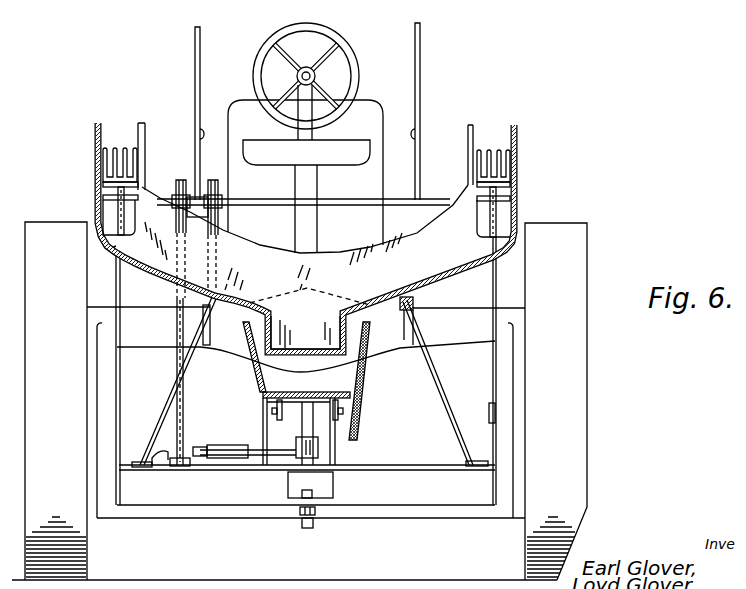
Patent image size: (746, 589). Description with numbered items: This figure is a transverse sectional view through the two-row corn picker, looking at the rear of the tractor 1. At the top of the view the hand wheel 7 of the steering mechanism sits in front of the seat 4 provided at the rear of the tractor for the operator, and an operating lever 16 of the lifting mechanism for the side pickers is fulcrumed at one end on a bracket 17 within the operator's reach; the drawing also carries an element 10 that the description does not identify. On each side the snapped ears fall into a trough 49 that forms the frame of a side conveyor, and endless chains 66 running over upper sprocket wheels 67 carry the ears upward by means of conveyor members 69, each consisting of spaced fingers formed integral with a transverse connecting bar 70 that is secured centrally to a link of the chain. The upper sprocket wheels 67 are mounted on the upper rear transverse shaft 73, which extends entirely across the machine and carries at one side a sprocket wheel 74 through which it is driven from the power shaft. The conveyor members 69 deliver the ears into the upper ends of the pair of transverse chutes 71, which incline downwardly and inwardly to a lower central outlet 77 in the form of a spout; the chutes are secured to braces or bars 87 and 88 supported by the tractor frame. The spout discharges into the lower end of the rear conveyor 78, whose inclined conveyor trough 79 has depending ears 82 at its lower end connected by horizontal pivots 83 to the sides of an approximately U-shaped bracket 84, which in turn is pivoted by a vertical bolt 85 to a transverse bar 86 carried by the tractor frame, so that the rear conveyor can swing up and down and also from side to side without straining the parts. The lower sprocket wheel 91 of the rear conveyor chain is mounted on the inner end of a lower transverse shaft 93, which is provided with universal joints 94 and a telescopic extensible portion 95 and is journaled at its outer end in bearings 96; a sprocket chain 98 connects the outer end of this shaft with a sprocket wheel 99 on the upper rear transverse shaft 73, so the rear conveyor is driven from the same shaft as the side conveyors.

The tractor 1 is at (361, 116).
The seat 4 is at (276, 160).
The hand wheel 7 is at (318, 38).
The rod 10 is at (184, 5).
The operating lever 16 is at (195, 72).
The bracket 17 is at (432, 306).
The trough 49 is at (510, 268).
The endless chains 66 is at (538, 210).
The upper sprocket wheels 67 is at (497, 200).
The conveyor members 69 is at (118, 160).
The transverse connecting bar 70 is at (105, 181).
The transverse chutes 71 is at (306, 237).
The upper rear transverse shaft 73 is at (350, 201).
The sprocket wheel 74 is at (218, 212).
The lower central outlet 77 is at (305, 332).
The rear conveyor 78 is at (379, 369).
The inclined conveyor trough 79 is at (355, 425).
The depending ears 82 is at (347, 410).
The pivots 83 is at (277, 410).
The U-shaped bracket 84 is at (287, 483).
The vertical bolt 85 is at (308, 528).
The transverse bar 86 is at (210, 519).
The brace 87 is at (447, 393).
The brace 88 is at (440, 298).
The lower sprocket wheel 91 is at (318, 450).
The lower transverse shaft 93 is at (236, 447).
The universal joints 94 is at (263, 443).
The telescopic extensible portion 95 is at (212, 447).
The bearings 96 is at (160, 466).
The sprocket chain 98 is at (176, 362).
The sprocket wheel 99 is at (178, 186).